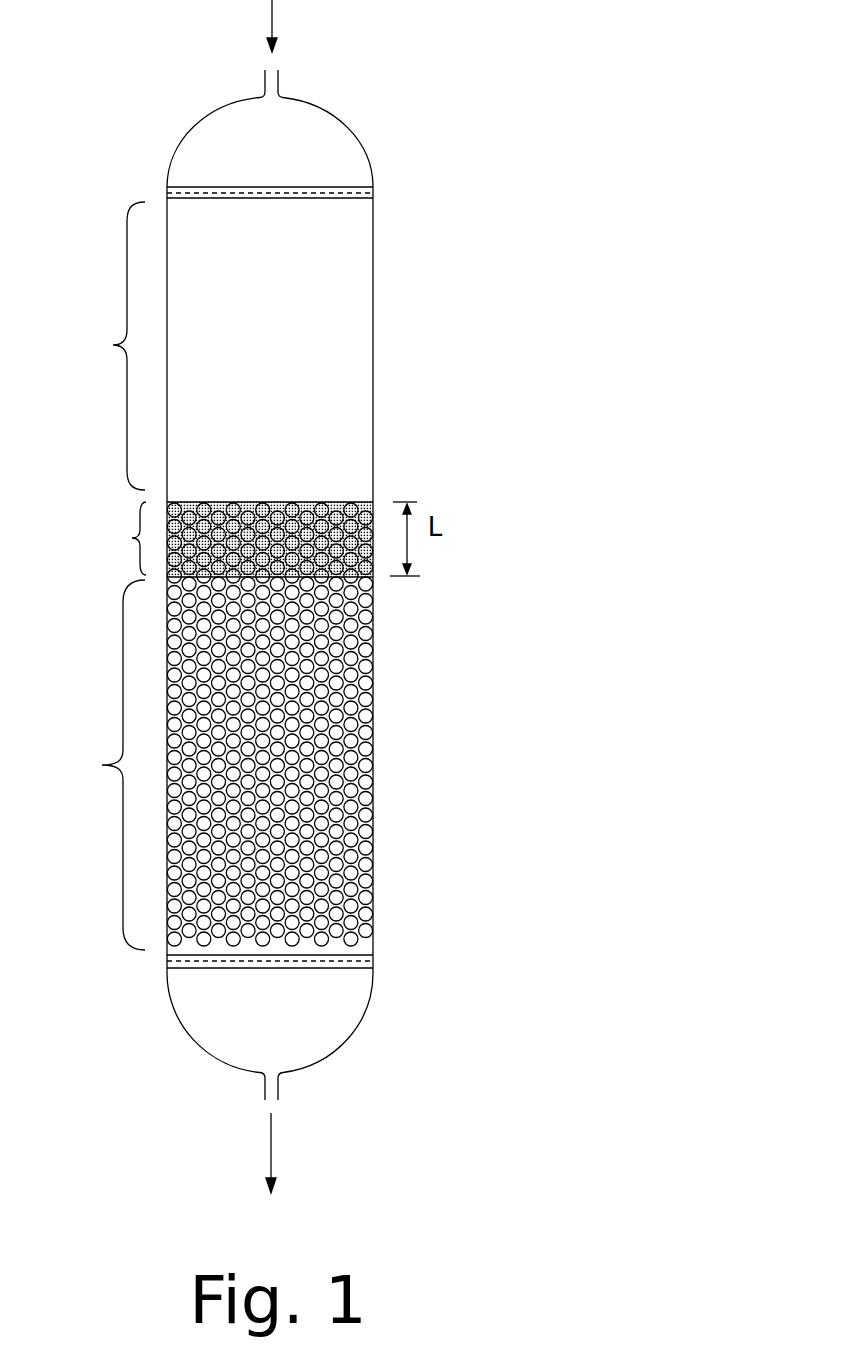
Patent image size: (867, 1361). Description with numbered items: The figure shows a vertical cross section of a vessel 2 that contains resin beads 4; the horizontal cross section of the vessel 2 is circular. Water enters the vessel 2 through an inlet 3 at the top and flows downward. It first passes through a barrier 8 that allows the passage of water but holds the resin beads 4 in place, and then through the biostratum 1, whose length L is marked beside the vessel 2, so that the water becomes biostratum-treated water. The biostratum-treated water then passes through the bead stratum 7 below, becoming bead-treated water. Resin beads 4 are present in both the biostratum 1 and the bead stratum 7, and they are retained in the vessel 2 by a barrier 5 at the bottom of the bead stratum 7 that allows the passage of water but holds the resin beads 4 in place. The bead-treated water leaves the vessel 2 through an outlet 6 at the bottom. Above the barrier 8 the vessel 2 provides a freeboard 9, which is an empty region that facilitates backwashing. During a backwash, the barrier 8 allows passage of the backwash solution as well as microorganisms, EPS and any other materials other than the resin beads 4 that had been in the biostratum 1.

The biostratum 1 is at (130, 538).
The vessel 2 is at (347, 128).
The inlet 3 is at (263, 80).
The resin beads 4 is at (363, 718).
The barrier 5 is at (373, 961).
The outlet 6 is at (278, 1092).
The bead stratum 7 is at (100, 765).
The barrier 8 is at (373, 192).
The freeboard 9 is at (113, 345).